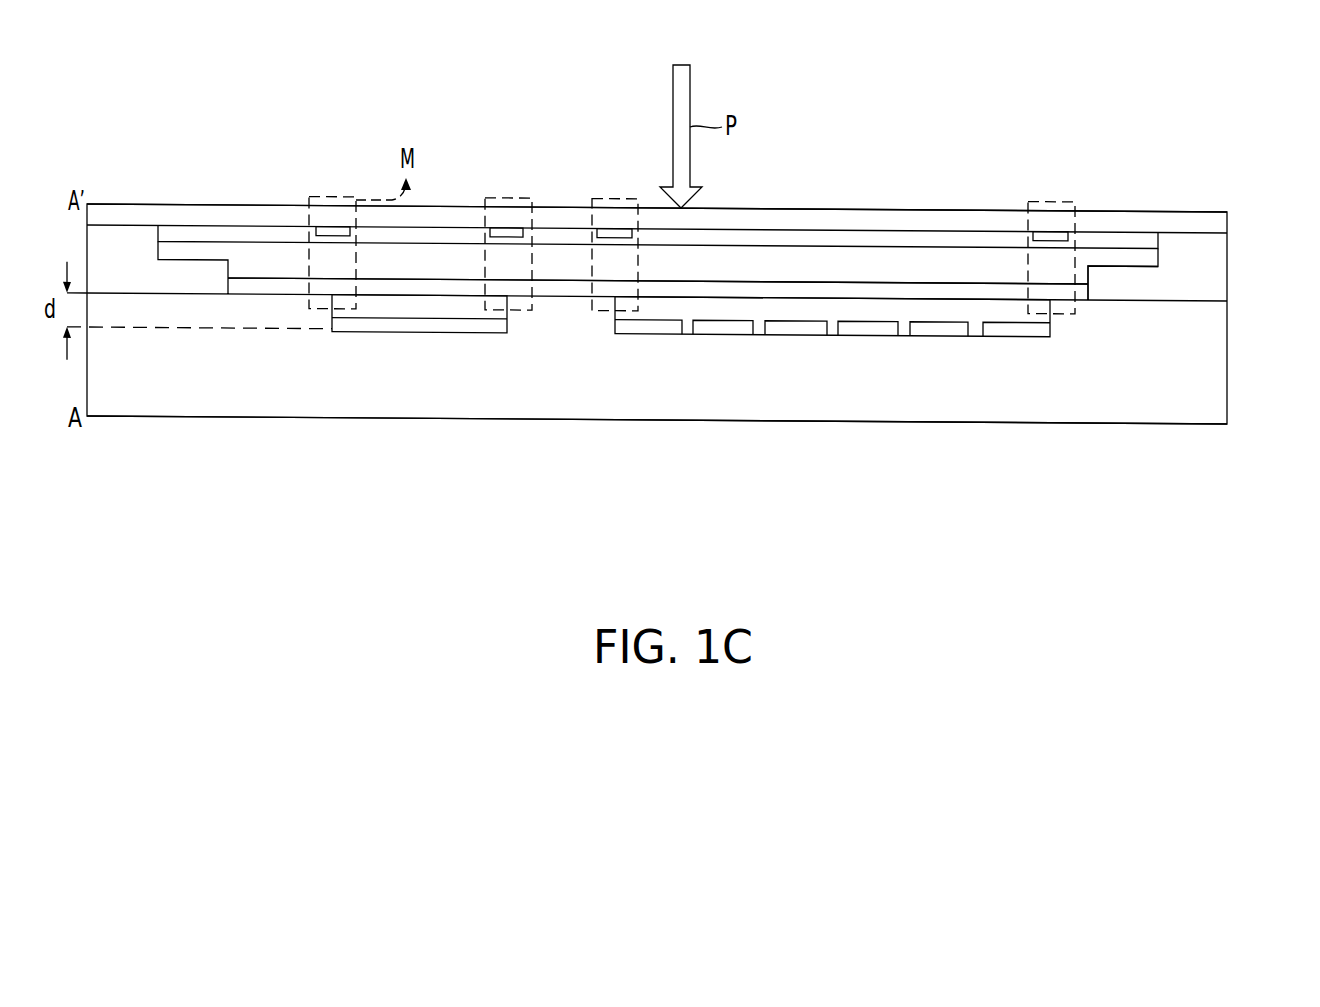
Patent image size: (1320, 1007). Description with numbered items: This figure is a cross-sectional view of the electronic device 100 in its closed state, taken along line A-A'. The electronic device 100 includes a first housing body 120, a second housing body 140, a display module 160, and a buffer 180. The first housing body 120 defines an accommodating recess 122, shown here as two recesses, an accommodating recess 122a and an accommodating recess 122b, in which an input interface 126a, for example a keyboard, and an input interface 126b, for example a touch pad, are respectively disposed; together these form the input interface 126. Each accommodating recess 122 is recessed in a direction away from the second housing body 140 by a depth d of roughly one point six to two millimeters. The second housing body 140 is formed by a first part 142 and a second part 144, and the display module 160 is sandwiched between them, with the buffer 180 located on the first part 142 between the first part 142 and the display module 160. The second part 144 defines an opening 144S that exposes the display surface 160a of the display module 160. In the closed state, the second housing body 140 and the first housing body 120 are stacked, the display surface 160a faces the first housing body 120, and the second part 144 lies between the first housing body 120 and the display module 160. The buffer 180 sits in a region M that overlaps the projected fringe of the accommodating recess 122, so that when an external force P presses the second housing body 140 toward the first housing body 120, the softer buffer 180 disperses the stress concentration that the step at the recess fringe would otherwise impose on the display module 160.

The electronic device 100 is at (1170, 567).
The first housing body 120 is at (1212, 366).
The accommodating recess 122 is at (691, 403).
The accommodating recess 122a is at (624, 320).
The accommodating recess 122b is at (499, 320).
The input interface 126 is at (561, 200).
The input interface 126a is at (648, 322).
The input interface 126b is at (472, 323).
The second housing body 140 is at (1271, 215).
The first part 142 is at (1210, 222).
The second part 144 is at (1212, 246).
The opening 144S is at (1082, 291).
The display module 160 is at (1150, 258).
The display surface 160a is at (982, 289).
The buffer 180 is at (331, 232).